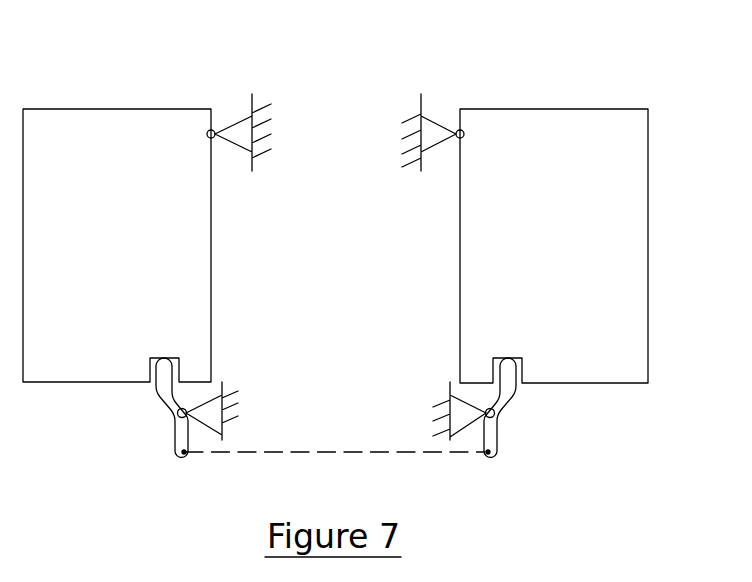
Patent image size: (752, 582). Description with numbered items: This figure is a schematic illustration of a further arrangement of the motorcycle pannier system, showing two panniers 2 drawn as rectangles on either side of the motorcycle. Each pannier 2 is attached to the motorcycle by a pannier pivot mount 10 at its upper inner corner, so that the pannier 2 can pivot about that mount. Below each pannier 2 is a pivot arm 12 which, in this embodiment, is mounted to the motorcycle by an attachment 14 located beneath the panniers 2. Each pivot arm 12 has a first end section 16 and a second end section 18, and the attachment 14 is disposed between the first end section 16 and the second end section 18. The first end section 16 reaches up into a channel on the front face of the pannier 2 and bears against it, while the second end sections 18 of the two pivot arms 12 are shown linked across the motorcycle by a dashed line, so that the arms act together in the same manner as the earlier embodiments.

The pannier 2 is at (648, 134).
The pannier pivot mount 10 is at (459, 129).
The pivot arm 12 is at (515, 403).
The attachment 14 is at (498, 415).
The first end section 16 is at (505, 389).
The second end section 18 is at (497, 437).